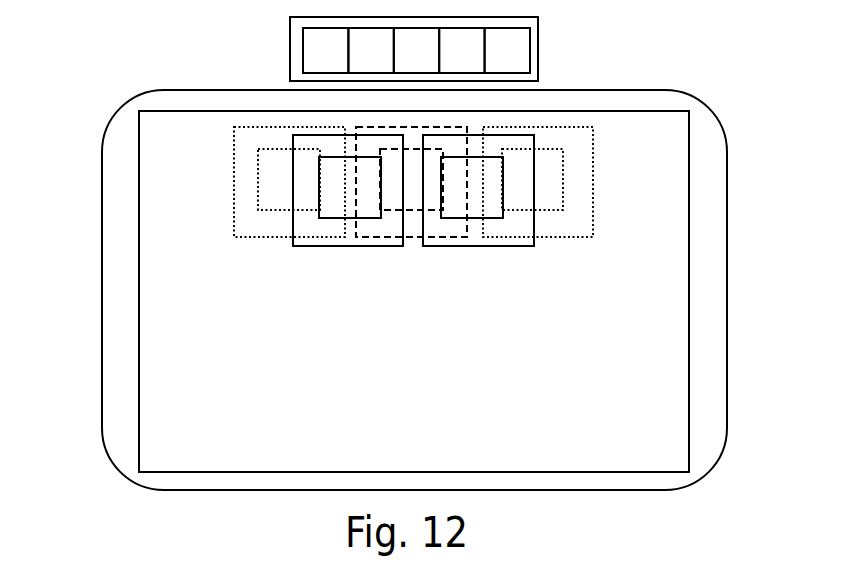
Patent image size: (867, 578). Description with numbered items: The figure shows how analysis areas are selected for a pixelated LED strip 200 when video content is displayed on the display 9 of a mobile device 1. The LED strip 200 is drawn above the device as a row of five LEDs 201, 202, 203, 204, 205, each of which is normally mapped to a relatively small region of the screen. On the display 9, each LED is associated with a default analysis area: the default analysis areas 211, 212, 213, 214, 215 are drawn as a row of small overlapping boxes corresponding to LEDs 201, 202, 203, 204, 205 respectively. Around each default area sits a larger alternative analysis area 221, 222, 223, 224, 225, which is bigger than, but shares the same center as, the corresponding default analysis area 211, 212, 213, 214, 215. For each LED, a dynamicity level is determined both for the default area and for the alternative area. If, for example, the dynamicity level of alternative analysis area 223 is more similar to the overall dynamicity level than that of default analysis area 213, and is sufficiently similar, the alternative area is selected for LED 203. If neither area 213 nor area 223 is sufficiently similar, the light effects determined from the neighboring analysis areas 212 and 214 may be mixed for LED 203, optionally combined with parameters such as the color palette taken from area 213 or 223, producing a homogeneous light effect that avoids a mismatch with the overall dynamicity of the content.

The mobile device 1 is at (103, 300).
The display 9 is at (689, 453).
The pixelated LED strip 200 is at (290, 45).
The LED 201 is at (325, 50).
The LED 202 is at (370, 50).
The LED 203 is at (416, 50).
The LED 204 is at (461, 50).
The LED 205 is at (507, 50).
The default analysis area 211 is at (272, 210).
The default analysis area 212 is at (363, 218).
The default analysis area 213 is at (432, 210).
The default analysis area 214 is at (495, 218).
The default analysis area 215 is at (567, 210).
The alternative analysis area 221 is at (245, 237).
The alternative analysis area 222 is at (315, 246).
The alternative analysis area 223 is at (415, 237).
The alternative analysis area 224 is at (463, 246).
The alternative analysis area 225 is at (543, 237).